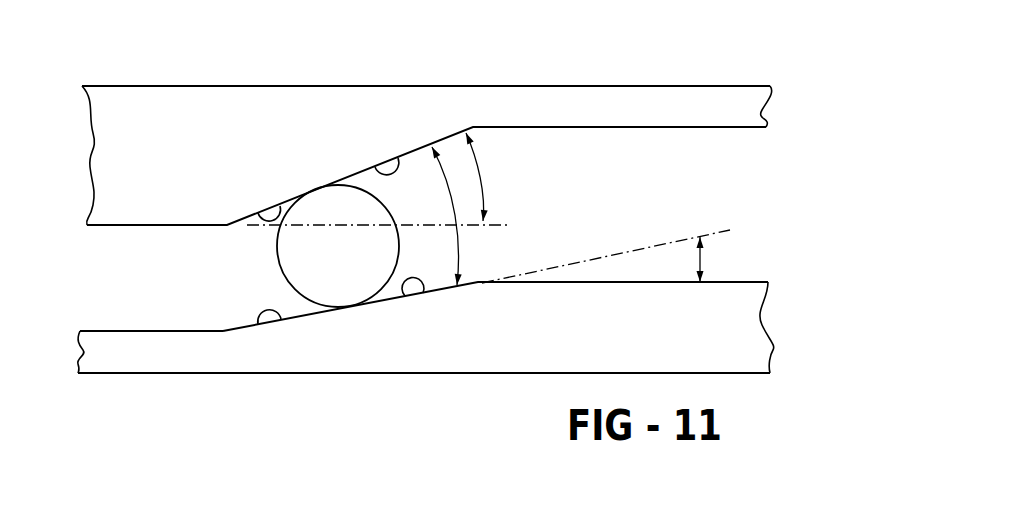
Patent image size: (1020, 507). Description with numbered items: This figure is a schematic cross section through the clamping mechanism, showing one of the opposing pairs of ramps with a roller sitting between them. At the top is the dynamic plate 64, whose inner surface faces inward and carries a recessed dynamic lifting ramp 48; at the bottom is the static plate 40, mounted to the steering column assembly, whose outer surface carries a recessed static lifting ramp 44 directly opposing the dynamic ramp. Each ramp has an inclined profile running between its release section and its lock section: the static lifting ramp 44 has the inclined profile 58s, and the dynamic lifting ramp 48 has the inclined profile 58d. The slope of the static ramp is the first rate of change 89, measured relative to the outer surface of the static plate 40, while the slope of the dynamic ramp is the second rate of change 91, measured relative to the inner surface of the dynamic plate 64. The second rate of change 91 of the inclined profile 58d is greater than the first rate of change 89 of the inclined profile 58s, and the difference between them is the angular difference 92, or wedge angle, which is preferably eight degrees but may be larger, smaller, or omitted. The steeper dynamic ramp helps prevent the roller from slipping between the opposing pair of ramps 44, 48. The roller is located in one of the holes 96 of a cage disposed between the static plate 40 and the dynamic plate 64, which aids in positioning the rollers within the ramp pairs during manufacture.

The dynamic plate 64 is at (157, 86).
The dynamic lifting ramps 48 is at (397, 160).
The inclined profile of the dynamic lifting ramps 58d is at (280, 206).
The second rate of change 91 is at (481, 176).
The angular difference 92 is at (456, 245).
The first rate of change 89 is at (700, 258).
The static plate 40 is at (167, 373).
The holes 96 is at (130, 331).
The static lifting ramps 44 is at (421, 294).
The inclined profile of the static lifting ramps 58s is at (281, 319).